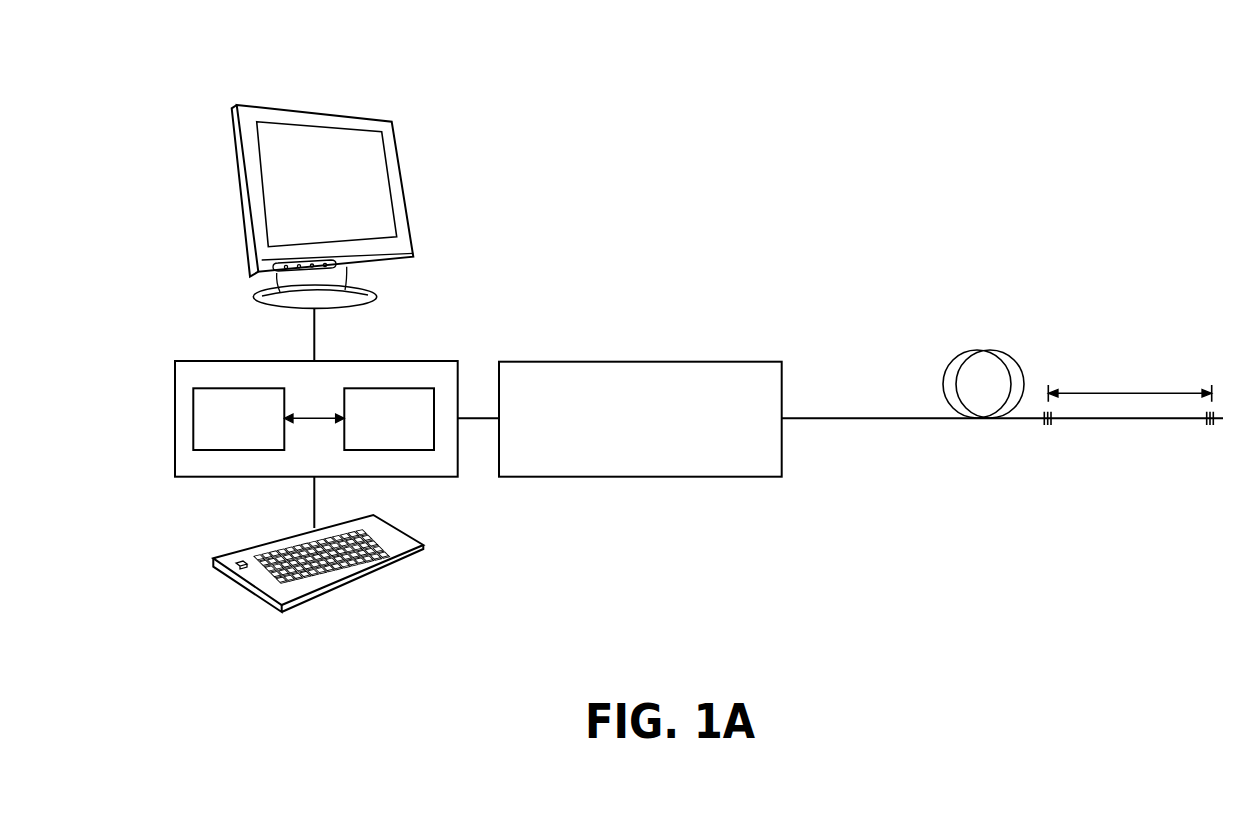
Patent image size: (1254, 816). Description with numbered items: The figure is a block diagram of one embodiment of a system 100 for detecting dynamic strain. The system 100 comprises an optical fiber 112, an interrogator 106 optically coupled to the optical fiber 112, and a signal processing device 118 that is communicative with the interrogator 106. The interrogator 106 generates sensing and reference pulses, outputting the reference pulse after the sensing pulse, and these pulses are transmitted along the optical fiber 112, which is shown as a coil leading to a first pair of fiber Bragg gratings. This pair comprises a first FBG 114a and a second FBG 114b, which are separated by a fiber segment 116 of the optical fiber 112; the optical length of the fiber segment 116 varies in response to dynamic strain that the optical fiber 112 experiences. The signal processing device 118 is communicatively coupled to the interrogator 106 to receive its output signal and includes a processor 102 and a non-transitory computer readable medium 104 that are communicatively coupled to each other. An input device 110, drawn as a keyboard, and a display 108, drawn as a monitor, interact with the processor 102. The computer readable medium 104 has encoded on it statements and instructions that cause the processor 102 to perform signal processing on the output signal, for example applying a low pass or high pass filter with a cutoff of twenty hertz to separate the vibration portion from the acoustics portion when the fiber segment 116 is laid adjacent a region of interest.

The system for detecting dynamic strain 100 is at (837, 125).
The processor 102 is at (259, 433).
The non-transitory computer readable medium 104 is at (409, 433).
The interrogator 106 is at (662, 433).
The display 108 is at (323, 110).
The input device 110 is at (347, 583).
The optical fiber 112 is at (993, 350).
The first fiber Bragg grating 114a is at (1038, 423).
The second fiber Bragg grating 114b is at (1203, 423).
The fiber segment 116 is at (1132, 392).
The signal processing device 118 is at (388, 360).